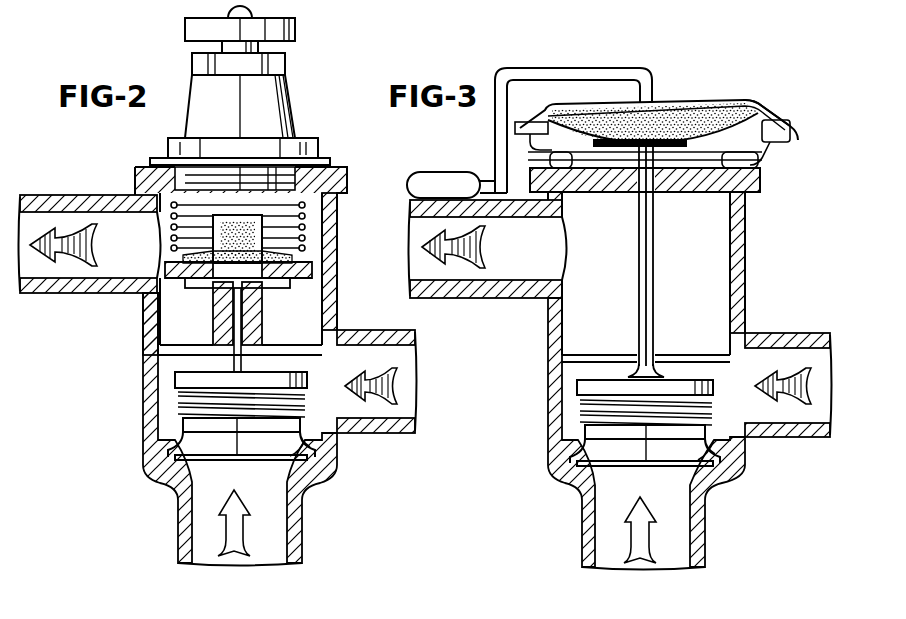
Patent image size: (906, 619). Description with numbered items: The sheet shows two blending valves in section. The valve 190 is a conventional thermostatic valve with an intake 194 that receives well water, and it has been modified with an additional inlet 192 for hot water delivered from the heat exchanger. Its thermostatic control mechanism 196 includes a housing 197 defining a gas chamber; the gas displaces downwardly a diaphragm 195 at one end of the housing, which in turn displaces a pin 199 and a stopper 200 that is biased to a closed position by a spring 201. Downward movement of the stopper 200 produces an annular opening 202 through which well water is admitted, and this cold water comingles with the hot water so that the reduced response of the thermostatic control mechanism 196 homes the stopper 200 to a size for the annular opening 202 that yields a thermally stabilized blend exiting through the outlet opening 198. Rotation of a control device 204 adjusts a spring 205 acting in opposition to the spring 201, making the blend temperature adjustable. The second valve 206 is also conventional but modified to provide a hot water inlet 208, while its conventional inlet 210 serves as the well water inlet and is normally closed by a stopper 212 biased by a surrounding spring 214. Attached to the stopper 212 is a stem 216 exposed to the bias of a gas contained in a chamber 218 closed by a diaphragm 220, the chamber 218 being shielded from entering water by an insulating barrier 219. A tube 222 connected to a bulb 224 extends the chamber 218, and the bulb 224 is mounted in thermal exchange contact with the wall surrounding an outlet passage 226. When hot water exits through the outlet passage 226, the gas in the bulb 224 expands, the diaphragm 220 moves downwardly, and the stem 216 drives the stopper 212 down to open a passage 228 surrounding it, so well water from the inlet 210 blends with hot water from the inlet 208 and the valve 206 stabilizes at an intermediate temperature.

In FIG. 2, the valve 190 is at (124, 351).
In FIG. 2, the inlet 192 is at (379, 345).
In FIG. 2, the intake 194 is at (198, 533).
In FIG. 2, the diaphragm 195 is at (288, 279).
In FIG. 2, the thermostatic control mechanism 196 is at (185, 296).
In FIG. 2, the housing 197 is at (304, 239).
In FIG. 2, the outlet opening 198 is at (114, 272).
In FIG. 2, the pin 199 is at (245, 325).
In FIG. 2, the stopper 200 is at (190, 428).
In FIG. 2, the spring 201 is at (180, 405).
In FIG. 2, the annular opening 202 is at (305, 445).
In FIG. 2, the control device 204 is at (185, 30).
In FIG. 2, the spring 205 is at (304, 211).
In FIG. 3, the valve 206 is at (686, 92).
In FIG. 3, the hot water inlet 208 is at (794, 350).
In FIG. 3, the inlet 210 is at (606, 536).
In FIG. 3, the stopper 212 is at (633, 430).
In FIG. 3, the spring 214 is at (583, 408).
In FIG. 3, the stem 216 is at (638, 268).
In FIG. 3, the chamber 218 is at (736, 104).
In FIG. 3, the insulating barrier 219 is at (619, 186).
In FIG. 3, the diaphragm 220 is at (641, 110).
In FIG. 3, the tube 222 is at (570, 68).
In FIG. 3, the bulb 224 is at (447, 170).
In FIG. 3, the outlet passage 226 is at (485, 287).
In FIG. 3, the passage 228 is at (714, 450).